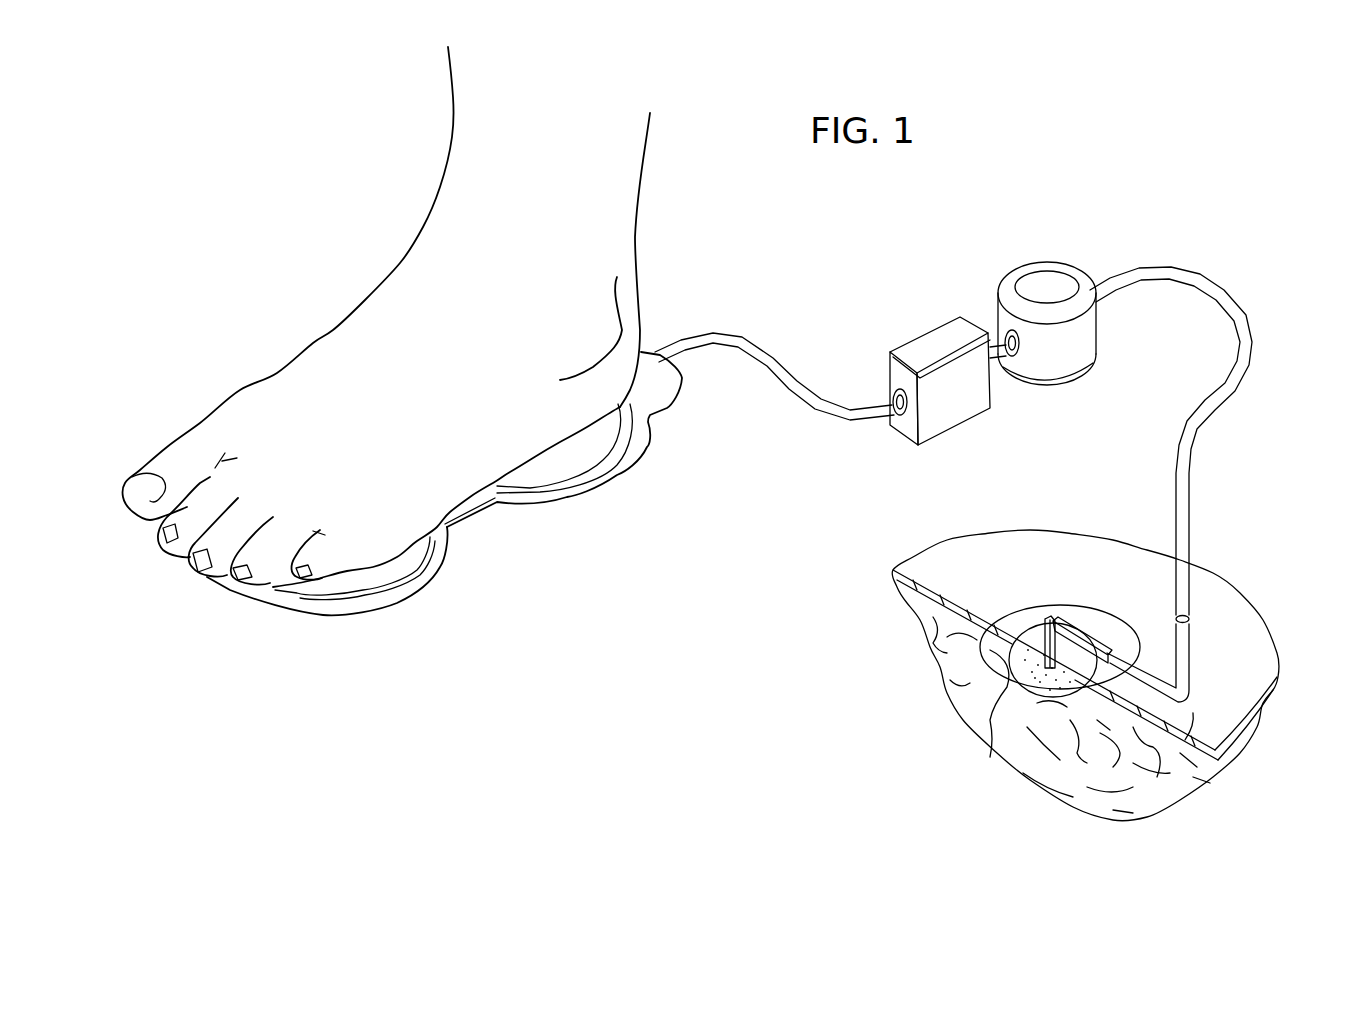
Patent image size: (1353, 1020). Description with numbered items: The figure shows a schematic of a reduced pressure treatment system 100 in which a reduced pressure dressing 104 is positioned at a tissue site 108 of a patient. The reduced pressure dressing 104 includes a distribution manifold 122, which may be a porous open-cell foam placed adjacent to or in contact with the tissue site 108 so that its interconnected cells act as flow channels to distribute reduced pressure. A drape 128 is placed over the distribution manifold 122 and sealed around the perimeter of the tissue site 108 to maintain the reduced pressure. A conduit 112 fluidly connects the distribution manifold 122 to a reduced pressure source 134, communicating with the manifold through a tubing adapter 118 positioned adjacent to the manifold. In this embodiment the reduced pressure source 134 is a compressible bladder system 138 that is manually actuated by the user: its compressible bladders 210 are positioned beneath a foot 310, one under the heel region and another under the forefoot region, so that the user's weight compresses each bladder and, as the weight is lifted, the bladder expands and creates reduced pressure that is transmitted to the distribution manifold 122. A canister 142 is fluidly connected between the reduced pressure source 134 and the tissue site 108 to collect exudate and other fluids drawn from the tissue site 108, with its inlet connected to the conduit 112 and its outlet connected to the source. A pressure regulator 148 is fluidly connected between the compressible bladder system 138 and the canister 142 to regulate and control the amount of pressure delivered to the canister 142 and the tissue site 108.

The reduced pressure treatment system 100 is at (300, 200).
The foot 310 is at (318, 348).
The reduced pressure source 134 is at (506, 556).
The compressible bladder system 138 is at (511, 517).
The compressible bladders 210 is at (625, 438).
The pressure regulator 148 is at (930, 330).
The canister 142 is at (1020, 263).
The conduit 112 is at (1190, 471).
The reduced pressure dressing 104 is at (1057, 600).
The tubing adapter 118 is at (1033, 630).
The drape 128 is at (1110, 617).
The tissue site 108 is at (953, 697).
The distribution manifold 122 is at (997, 755).